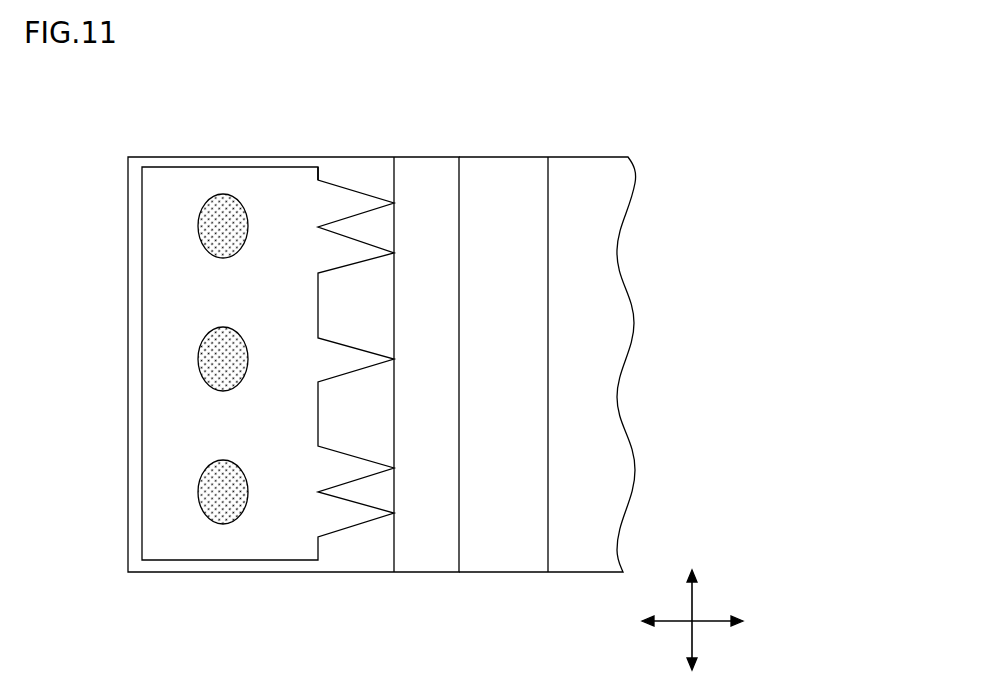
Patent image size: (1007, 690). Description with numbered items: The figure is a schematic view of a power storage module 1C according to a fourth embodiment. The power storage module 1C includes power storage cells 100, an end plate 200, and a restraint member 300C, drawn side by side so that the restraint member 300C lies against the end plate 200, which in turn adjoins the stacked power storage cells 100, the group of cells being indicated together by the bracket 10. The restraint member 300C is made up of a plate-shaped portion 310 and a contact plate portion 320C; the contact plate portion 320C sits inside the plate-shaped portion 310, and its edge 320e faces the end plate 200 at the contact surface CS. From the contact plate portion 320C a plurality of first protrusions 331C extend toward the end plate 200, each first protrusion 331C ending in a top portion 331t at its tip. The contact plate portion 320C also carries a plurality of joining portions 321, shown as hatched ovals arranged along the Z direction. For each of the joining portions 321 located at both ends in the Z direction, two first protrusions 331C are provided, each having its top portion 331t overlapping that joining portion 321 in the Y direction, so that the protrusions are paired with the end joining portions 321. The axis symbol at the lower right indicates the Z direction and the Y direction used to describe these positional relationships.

The power storage module 1C is at (163, 128).
The restraint member 300C is at (195, 103).
The plate-shaped portion 310 is at (215, 167).
The contact plate portion 320C is at (280, 182).
The edge of inner body 320e is at (318, 170).
The contact surface CS is at (394, 157).
The end plate 200 is at (427, 182).
The stacked body 10 is at (486, 103).
The power storage cells 100 is at (505, 182).
The joining portion 321 is at (220, 508).
The first protrusion 331C is at (352, 514).
The top portion 331t is at (395, 514).
The Z direction Z is at (690, 600).
The Y direction Y is at (711, 618).